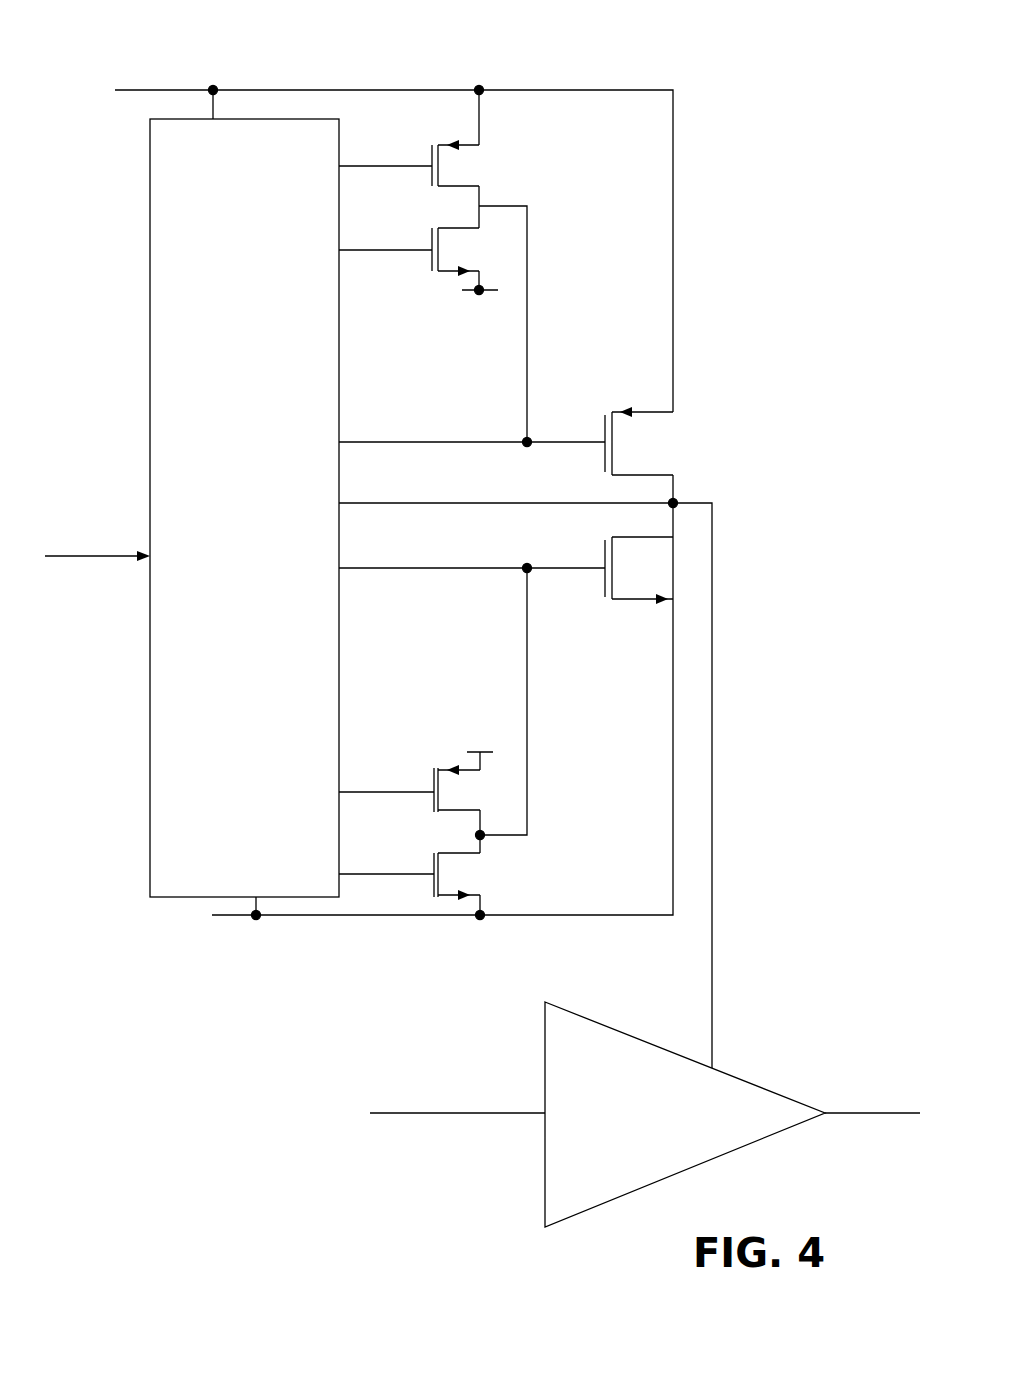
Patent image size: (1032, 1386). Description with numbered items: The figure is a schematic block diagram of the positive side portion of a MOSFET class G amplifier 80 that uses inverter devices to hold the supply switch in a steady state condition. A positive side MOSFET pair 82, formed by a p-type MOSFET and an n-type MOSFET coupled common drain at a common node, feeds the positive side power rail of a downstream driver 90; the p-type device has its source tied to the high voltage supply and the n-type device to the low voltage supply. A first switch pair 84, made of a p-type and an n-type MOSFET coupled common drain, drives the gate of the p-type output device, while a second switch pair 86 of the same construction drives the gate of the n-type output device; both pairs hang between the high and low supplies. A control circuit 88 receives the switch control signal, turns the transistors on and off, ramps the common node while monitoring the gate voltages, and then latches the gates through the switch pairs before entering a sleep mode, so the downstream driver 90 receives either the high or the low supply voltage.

The MOSFET class G amplifier 80 is at (800, 96).
The positive side MOSFET pair 82 is at (765, 411).
The first switch pair 84 is at (553, 166).
The second switch pair 86 is at (439, 688).
The control circuit 88 is at (339, 352).
The downstream driver 90 is at (606, 1026).